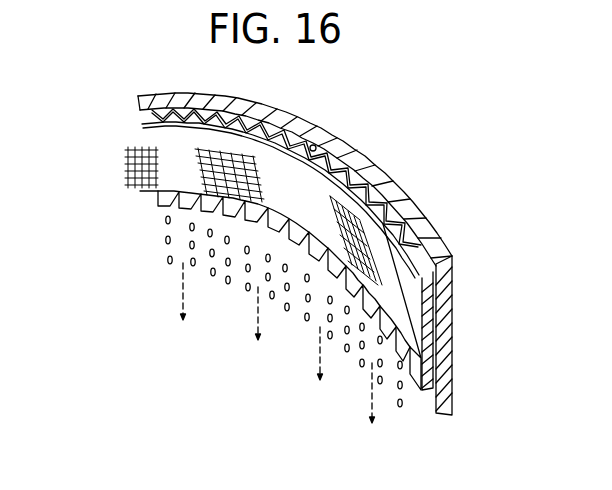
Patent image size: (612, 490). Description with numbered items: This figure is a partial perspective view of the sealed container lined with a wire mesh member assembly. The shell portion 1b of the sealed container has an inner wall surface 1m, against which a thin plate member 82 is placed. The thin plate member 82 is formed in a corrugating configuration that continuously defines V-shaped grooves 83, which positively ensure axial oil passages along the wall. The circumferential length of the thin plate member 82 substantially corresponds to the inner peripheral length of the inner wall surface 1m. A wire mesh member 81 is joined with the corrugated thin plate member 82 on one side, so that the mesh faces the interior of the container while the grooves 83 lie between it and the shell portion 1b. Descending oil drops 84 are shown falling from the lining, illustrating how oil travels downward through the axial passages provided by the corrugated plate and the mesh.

The shell portion 1b is at (350, 153).
The inner wall surface 1m is at (316, 146).
The thin plate member 82 is at (363, 173).
The V-shaped grooves 83 is at (383, 219).
The wire mesh member 81 is at (173, 172).
The descending oil drops 84 is at (248, 289).